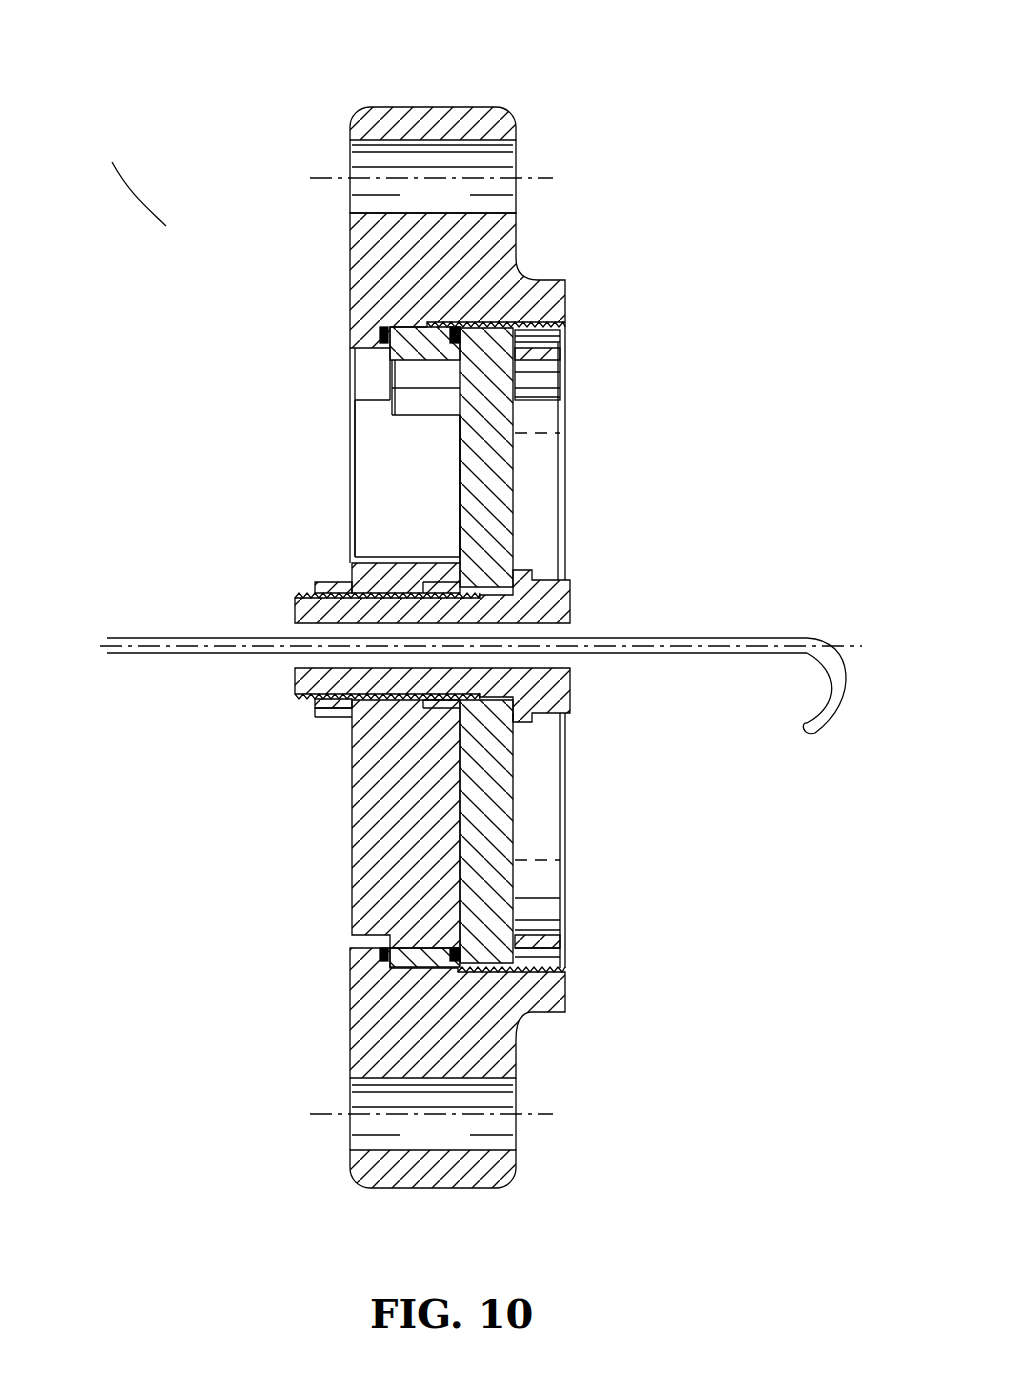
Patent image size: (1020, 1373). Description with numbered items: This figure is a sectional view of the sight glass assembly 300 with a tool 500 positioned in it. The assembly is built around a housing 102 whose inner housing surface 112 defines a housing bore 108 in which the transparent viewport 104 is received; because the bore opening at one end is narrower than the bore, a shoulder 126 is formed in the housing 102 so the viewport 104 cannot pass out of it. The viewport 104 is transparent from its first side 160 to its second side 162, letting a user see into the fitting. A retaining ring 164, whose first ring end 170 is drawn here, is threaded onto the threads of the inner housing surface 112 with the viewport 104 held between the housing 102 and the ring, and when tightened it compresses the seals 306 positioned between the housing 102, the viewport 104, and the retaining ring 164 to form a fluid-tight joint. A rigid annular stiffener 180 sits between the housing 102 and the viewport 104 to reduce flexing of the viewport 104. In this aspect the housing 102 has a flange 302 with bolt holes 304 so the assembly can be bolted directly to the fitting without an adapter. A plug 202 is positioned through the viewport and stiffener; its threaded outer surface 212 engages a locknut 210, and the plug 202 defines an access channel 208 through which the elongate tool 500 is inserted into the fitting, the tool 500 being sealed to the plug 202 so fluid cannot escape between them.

The housing 102 is at (387, 118).
The sight glass assembly 300 is at (168, 228).
The shoulder 126 is at (385, 330).
The housing bore 108 is at (395, 447).
The inner housing surface 112 is at (560, 300).
The first ring end 170 is at (563, 343).
The second side of the viewport 162 is at (520, 415).
The viewport 104 is at (497, 485).
The first side of the viewport 160 is at (455, 527).
The locknut 210 is at (317, 588).
The outer surface of the plug 212 is at (440, 565).
The plug 202 is at (567, 612).
The tool 500 is at (795, 640).
The access channel 208 is at (285, 657).
The stiffener 180 is at (360, 818).
The seals 306 is at (455, 950).
The retaining ring 164 is at (540, 943).
The flange 302 is at (378, 1162).
The bolt holes 304 is at (505, 1123).